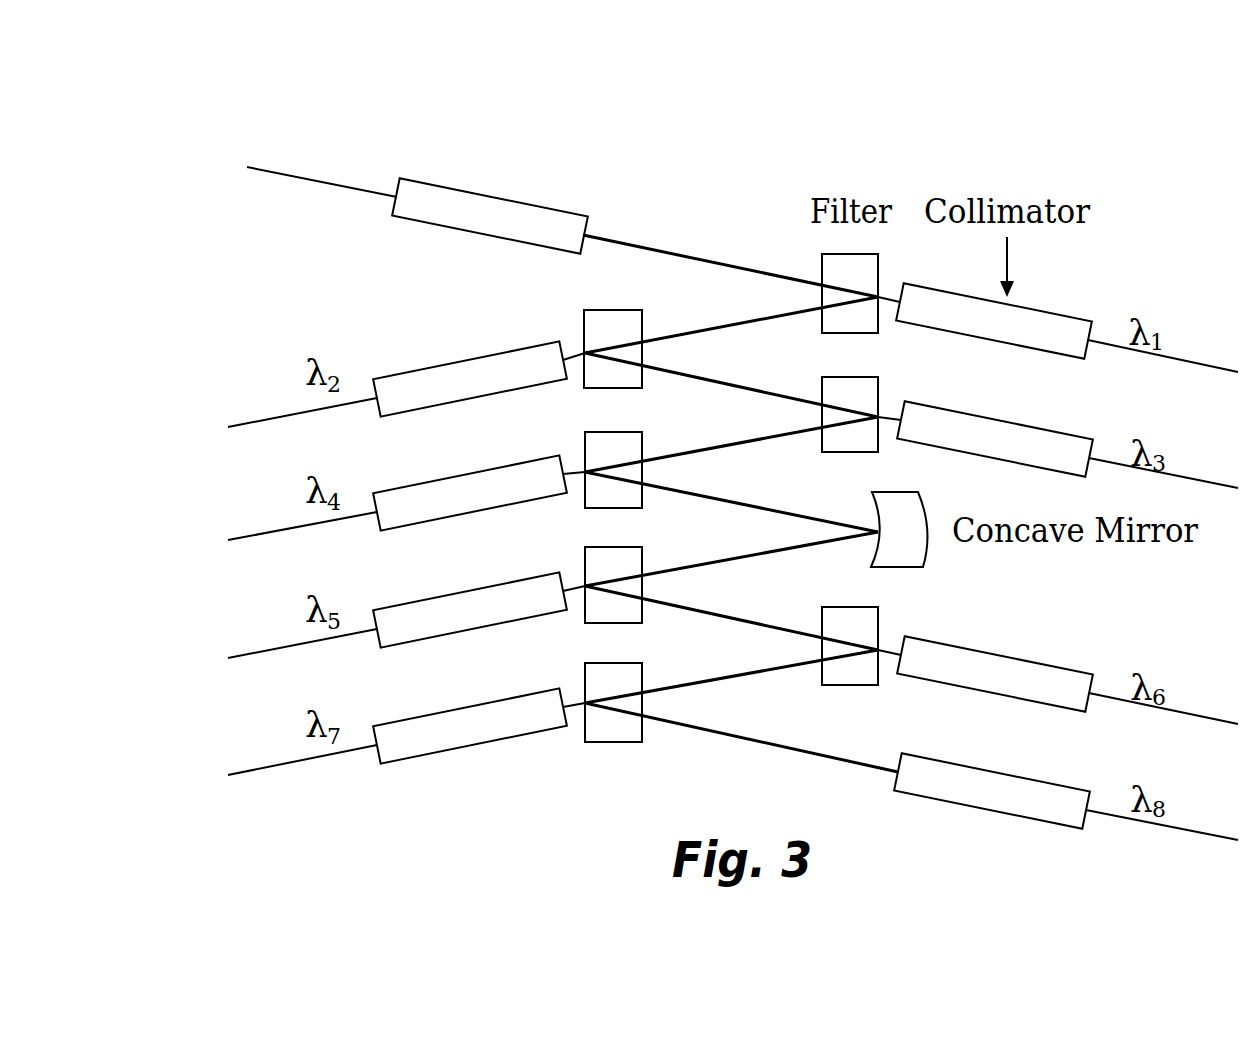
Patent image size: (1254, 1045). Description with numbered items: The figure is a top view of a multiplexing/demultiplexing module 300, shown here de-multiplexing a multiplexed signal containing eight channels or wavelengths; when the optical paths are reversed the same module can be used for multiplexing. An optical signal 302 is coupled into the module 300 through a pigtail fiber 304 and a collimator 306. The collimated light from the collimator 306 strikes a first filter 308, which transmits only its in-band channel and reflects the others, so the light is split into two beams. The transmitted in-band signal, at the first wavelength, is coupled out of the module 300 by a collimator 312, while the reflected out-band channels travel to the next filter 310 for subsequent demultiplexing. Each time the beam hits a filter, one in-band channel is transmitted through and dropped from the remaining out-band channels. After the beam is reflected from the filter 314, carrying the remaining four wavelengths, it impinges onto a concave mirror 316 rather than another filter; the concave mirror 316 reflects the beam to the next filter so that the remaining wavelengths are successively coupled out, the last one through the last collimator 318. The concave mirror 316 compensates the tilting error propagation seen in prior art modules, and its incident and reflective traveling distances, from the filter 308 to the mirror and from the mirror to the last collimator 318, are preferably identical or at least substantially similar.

The multiplexing/demultiplexing module 300 is at (1043, 142).
The optical signal 302 is at (450, 129).
The pigtail fiber 304 is at (293, 177).
The collimator 306 is at (485, 216).
The first filter 308 is at (825, 290).
The filter 310 is at (613, 335).
The collimator 312 is at (1067, 327).
The filter 314 is at (613, 456).
The concave mirror 316 is at (922, 527).
The last collimator 318 is at (1066, 787).